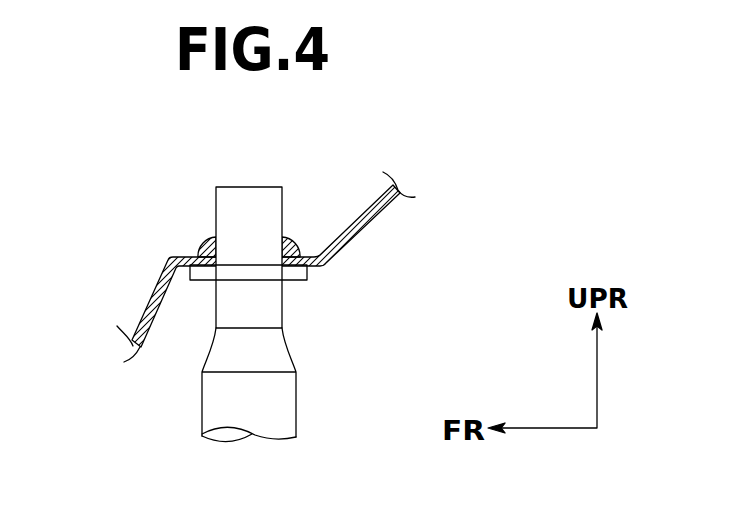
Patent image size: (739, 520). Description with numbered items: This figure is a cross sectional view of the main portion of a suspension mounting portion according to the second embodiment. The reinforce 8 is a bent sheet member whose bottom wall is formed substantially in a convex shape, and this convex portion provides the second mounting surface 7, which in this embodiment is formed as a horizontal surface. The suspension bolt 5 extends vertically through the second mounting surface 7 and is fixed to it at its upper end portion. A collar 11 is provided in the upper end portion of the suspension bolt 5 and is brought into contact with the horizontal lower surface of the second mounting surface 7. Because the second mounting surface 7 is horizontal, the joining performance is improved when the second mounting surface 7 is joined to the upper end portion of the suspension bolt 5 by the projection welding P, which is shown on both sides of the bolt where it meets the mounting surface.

The second mounting surface 7 is at (168, 258).
The reinforce 8 is at (367, 200).
The projection welding P is at (201, 240).
The suspension bolt 5 is at (288, 393).
The collar 11 is at (300, 278).